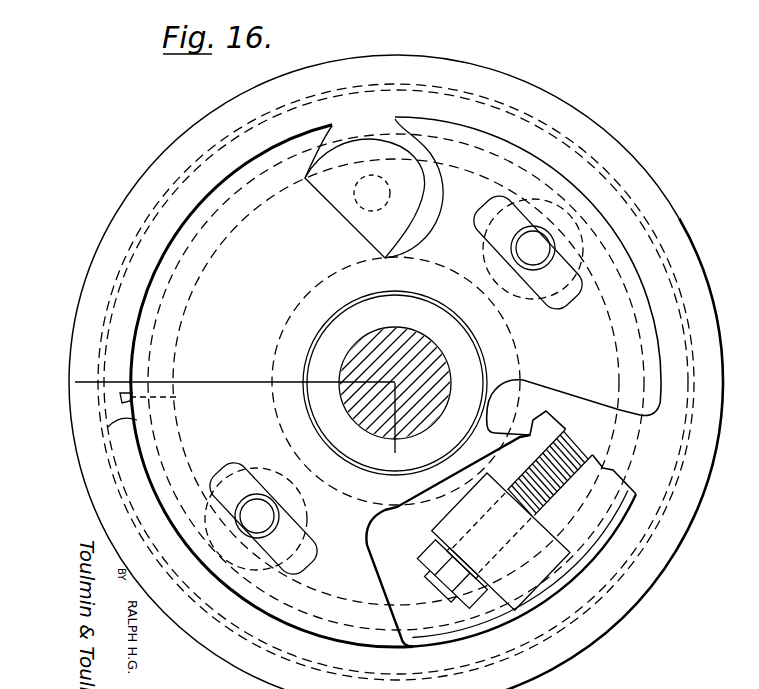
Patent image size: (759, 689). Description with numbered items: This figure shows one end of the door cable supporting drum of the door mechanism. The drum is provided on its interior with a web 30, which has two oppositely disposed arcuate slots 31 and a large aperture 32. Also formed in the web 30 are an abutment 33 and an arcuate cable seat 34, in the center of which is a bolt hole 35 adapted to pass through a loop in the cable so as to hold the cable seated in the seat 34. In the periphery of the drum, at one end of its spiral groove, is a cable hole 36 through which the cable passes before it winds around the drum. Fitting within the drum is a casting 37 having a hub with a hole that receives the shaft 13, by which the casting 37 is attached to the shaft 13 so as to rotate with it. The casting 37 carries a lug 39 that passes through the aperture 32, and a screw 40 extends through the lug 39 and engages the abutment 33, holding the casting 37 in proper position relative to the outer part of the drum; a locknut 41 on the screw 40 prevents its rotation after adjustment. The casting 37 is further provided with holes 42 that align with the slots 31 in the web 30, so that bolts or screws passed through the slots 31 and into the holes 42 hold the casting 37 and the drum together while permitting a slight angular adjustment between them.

The shaft 13 is at (356, 362).
The web 30 is at (193, 247).
The arcuate slots 31 is at (570, 300).
The large aperture 32 is at (380, 565).
The abutment 33 is at (579, 393).
The arcuate cable seat 34 is at (381, 229).
The bolt hole 35 is at (362, 196).
The cable hole 36 is at (158, 406).
The casting 37 is at (415, 598).
The lug 39 is at (473, 500).
The screw 40 is at (562, 488).
The locknut 41 is at (446, 526).
The holes 42 is at (532, 262).